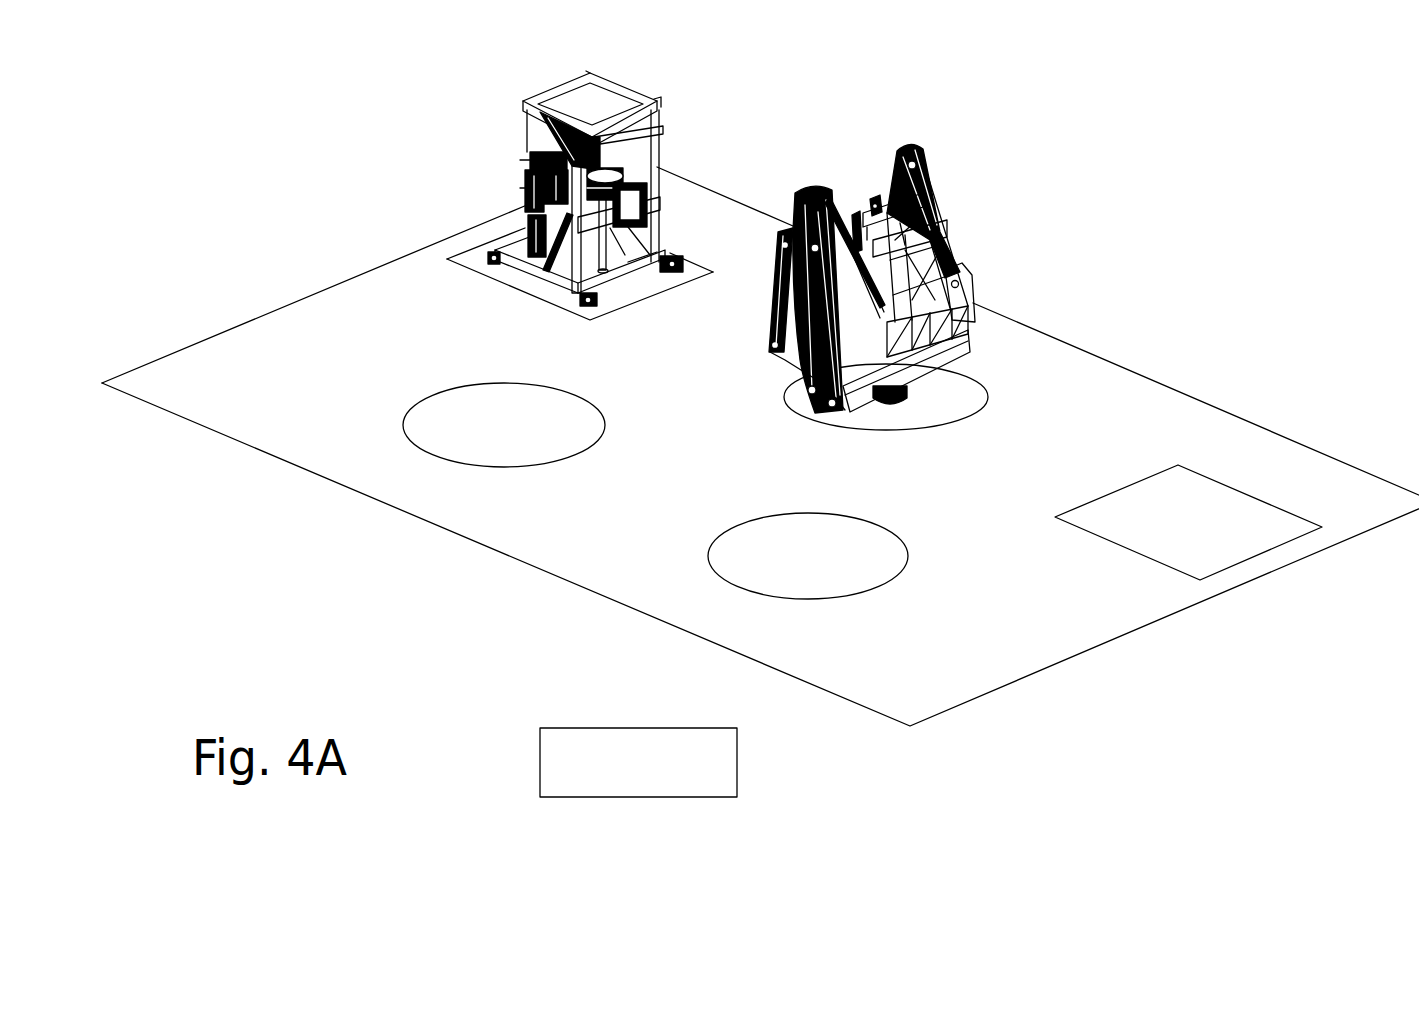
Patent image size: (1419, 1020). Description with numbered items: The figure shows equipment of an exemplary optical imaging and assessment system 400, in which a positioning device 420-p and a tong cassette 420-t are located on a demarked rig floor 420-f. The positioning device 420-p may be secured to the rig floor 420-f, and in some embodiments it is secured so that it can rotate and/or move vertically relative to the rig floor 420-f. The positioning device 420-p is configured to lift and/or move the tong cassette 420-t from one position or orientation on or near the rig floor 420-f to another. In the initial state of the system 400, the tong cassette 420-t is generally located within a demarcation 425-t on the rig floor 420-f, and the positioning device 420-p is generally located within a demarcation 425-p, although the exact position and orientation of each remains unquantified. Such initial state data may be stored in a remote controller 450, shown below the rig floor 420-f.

The optical imaging and assessment system 400 is at (1230, 148).
The rig floor 420-f is at (357, 278).
The tong cassette 420-t is at (528, 107).
The demarcation 425-t is at (518, 291).
The positioning device 420-p is at (918, 150).
The demarcation 425-p is at (862, 431).
The remote controller 450 is at (738, 773).